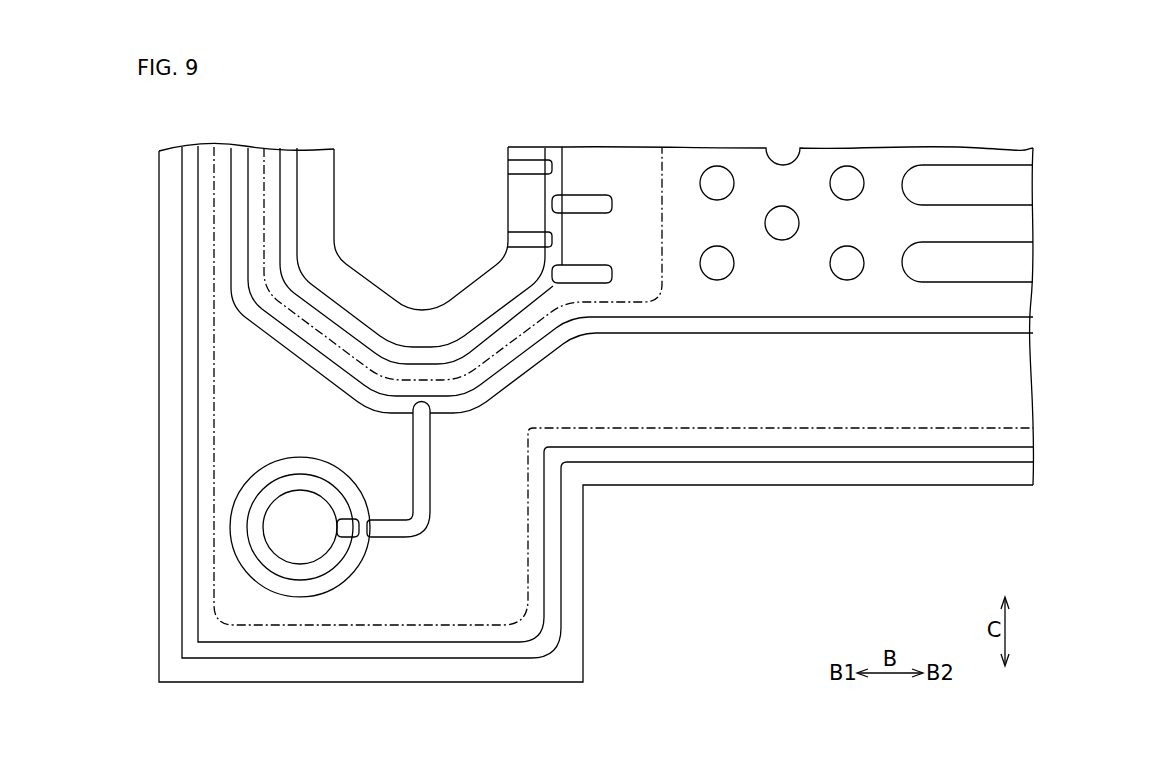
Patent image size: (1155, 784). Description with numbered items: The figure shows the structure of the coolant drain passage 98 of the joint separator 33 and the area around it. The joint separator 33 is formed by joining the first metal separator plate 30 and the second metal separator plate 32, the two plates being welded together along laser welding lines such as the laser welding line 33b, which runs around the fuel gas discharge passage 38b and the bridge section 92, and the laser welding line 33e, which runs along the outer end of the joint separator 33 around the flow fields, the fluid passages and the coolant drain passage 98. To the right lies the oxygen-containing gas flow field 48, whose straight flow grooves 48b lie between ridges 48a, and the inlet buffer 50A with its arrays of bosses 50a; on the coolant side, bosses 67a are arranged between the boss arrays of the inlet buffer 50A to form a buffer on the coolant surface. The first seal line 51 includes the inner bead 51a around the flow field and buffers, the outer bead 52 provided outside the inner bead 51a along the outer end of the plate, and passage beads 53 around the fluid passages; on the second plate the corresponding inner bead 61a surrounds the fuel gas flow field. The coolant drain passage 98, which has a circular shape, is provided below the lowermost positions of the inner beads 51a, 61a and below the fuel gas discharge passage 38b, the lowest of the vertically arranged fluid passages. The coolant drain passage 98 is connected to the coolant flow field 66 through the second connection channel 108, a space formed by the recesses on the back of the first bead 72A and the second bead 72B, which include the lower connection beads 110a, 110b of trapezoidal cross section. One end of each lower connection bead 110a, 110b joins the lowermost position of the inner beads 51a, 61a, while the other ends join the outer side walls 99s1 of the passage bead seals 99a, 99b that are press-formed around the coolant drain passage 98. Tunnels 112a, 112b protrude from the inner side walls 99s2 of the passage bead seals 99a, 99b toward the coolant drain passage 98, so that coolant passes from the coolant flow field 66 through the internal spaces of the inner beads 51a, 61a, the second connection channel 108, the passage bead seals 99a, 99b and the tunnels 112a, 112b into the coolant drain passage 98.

The first metal separator plate 30 is at (156, 633).
The second metal separator plate 32 is at (156, 666).
The joint separator 33 is at (533, 99).
The laser welding line 33b is at (265, 218).
The laser welding line 33e is at (964, 430).
The fuel gas discharge passage 38b is at (366, 187).
The oxygen-containing gas flow field 48 is at (1022, 223).
The ridges 48a is at (1012, 189).
The straight flow grooves 48b is at (1013, 231).
The inlet buffer 50A is at (717, 183).
The bosses 50a is at (717, 183).
The first seal line 51 is at (856, 466).
The inner bead 51a is at (881, 325).
The outer bead 52 is at (873, 455).
The passage beads 53 is at (288, 253).
The inner bead 61a is at (905, 325).
The coolant flow field 66 is at (1010, 302).
The bosses 67a is at (782, 223).
The first bead 72A is at (754, 466).
The second bead 72B is at (781, 466).
The bridge section 92 is at (624, 263).
The coolant drain passage 98 is at (285, 512).
The passage bead seal 99a is at (302, 588).
The passage bead seal 99b is at (288, 583).
The outer side walls 99s1 is at (333, 460).
The inner side walls 99s2 is at (270, 483).
The second connection channel 108 is at (390, 518).
The lower connection bead 110a is at (383, 538).
The lower connection bead 110b is at (398, 538).
The tunnel 112a is at (343, 533).
The tunnel 112b is at (338, 528).